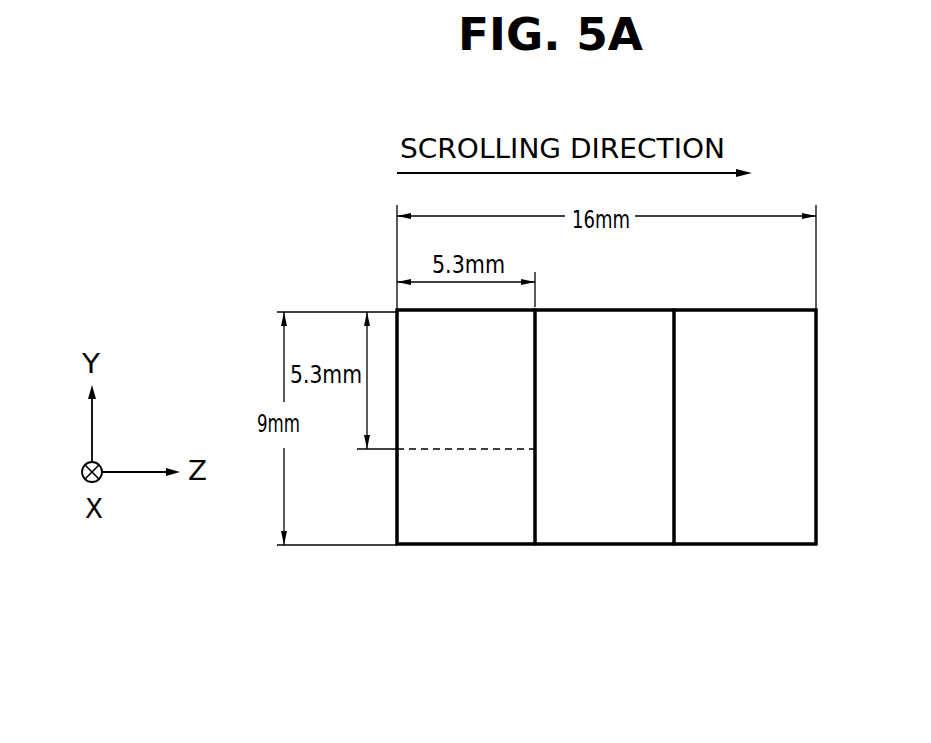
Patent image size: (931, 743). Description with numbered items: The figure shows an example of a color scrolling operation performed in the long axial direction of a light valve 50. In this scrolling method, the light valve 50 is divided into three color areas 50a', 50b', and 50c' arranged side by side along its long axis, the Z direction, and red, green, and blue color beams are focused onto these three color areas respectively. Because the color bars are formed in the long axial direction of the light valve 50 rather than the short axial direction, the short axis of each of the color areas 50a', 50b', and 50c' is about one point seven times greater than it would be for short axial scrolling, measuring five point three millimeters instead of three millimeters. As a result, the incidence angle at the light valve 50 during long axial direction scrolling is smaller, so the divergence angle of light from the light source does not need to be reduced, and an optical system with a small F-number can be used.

The light valve 50 is at (606, 501).
The color area 50a' is at (466, 471).
The color area 50b' is at (604, 471).
The color area 50c' is at (745, 471).